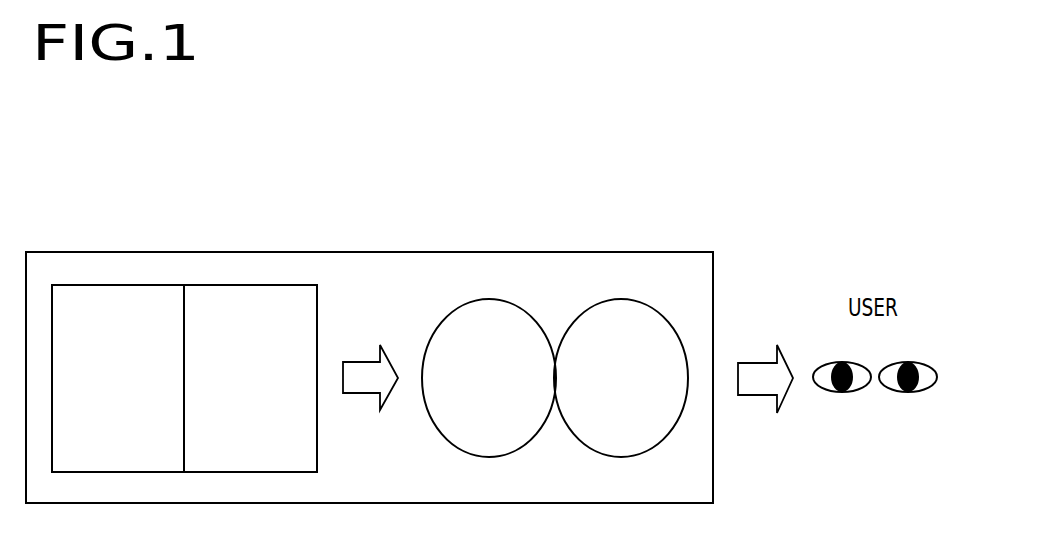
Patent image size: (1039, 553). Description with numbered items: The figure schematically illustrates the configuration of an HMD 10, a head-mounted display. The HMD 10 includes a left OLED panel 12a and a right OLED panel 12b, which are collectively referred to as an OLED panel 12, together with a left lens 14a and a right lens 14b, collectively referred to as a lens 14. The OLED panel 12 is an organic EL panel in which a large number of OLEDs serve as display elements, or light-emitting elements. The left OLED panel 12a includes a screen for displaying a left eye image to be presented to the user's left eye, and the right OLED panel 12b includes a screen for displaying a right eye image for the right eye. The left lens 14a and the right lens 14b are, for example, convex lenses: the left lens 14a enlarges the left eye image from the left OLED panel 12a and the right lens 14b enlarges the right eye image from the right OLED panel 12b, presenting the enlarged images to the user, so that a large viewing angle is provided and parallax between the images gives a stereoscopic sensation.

The HMD 10 is at (370, 252).
The OLED panel 12 is at (26, 145).
The left OLED panel 12a is at (120, 285).
The right OLED panel 12b is at (248, 285).
The lens 14 is at (395, 145).
The left lens 14a is at (500, 299).
The right lens 14b is at (632, 299).